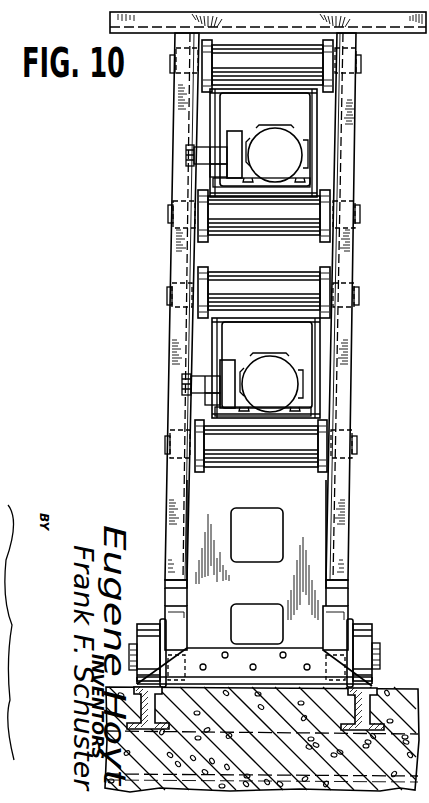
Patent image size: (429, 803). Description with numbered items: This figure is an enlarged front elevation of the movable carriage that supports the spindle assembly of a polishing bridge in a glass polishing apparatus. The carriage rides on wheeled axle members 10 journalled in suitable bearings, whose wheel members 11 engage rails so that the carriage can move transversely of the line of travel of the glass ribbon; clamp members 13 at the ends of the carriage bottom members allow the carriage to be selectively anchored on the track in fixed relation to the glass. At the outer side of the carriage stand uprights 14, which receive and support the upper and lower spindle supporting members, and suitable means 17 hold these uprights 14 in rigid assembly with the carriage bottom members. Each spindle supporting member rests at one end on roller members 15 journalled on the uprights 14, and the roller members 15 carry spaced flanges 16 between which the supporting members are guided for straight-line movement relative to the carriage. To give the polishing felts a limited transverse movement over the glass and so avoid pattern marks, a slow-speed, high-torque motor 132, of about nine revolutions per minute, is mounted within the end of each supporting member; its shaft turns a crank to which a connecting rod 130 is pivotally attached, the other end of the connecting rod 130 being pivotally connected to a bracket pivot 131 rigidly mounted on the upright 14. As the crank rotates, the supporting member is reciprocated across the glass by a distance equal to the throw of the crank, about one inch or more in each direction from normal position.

The wheeled axle member 10 is at (380, 655).
The wheel member 11 is at (362, 622).
The clamp member 13 is at (208, 652).
The upright 14 is at (165, 535).
The roller member 15 is at (275, 71).
The flange 16 is at (332, 78).
The means for maintaining the carriage members in rigid assembly 17 is at (200, 490).
The connecting rod 130 is at (220, 156).
The bracket pivot 131 is at (186, 154).
The motor 132 is at (283, 165).